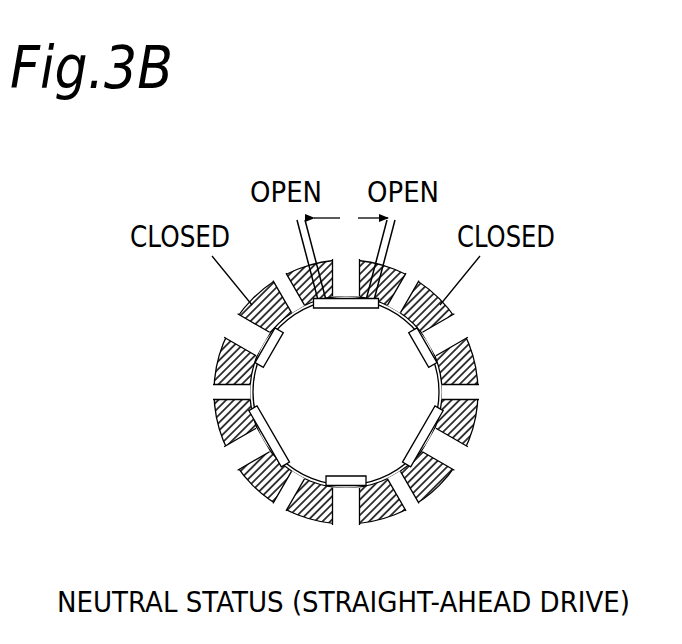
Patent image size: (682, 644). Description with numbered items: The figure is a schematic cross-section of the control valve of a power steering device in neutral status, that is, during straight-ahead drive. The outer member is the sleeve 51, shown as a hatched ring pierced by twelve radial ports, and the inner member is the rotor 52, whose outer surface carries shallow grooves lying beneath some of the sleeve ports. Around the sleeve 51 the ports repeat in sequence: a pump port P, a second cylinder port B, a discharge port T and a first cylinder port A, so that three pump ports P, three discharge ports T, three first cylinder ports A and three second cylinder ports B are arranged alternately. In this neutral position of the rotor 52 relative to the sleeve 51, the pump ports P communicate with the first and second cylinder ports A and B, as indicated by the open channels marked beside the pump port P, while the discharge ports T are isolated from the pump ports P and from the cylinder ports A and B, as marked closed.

The sleeve 51 is at (468, 432).
The rotor 52 is at (407, 422).
The pump port P is at (348, 357).
The discharge port T is at (338, 433).
The first cylinder port A is at (383, 391).
The second cylinder port B is at (314, 392).